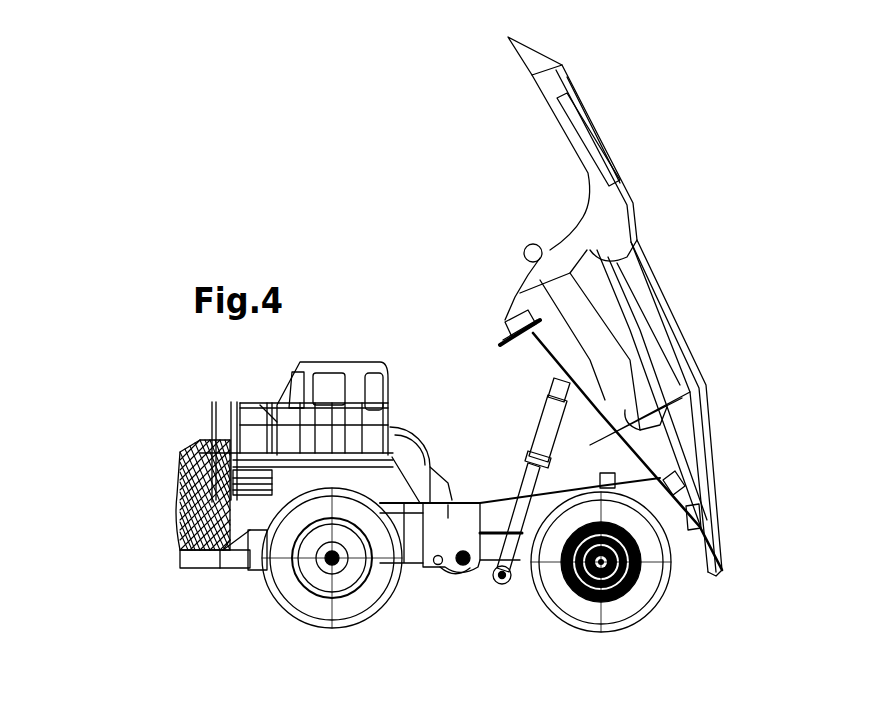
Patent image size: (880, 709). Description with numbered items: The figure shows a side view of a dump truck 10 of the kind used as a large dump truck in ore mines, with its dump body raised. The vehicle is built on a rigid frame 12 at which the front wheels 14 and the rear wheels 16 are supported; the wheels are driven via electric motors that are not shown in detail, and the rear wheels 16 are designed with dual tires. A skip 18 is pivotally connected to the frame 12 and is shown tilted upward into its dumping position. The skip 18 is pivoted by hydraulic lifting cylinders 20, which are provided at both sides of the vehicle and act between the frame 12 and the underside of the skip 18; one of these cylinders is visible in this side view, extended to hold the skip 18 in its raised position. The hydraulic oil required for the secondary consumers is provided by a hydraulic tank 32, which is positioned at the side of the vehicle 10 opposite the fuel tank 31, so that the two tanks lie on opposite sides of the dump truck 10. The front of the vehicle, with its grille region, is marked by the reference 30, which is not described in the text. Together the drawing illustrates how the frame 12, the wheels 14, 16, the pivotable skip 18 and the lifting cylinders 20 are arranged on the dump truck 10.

The dump truck 10 is at (452, 190).
The frame 12 is at (497, 523).
The front wheels 14 is at (356, 606).
The rear wheels 16 is at (641, 601).
The skip 18 is at (652, 301).
The hydraulic lifting cylinders 20 is at (540, 427).
The radiator grille 30 is at (172, 539).
The fuel tank 31 is at (452, 568).
The hydraulic tank 32 is at (446, 470).